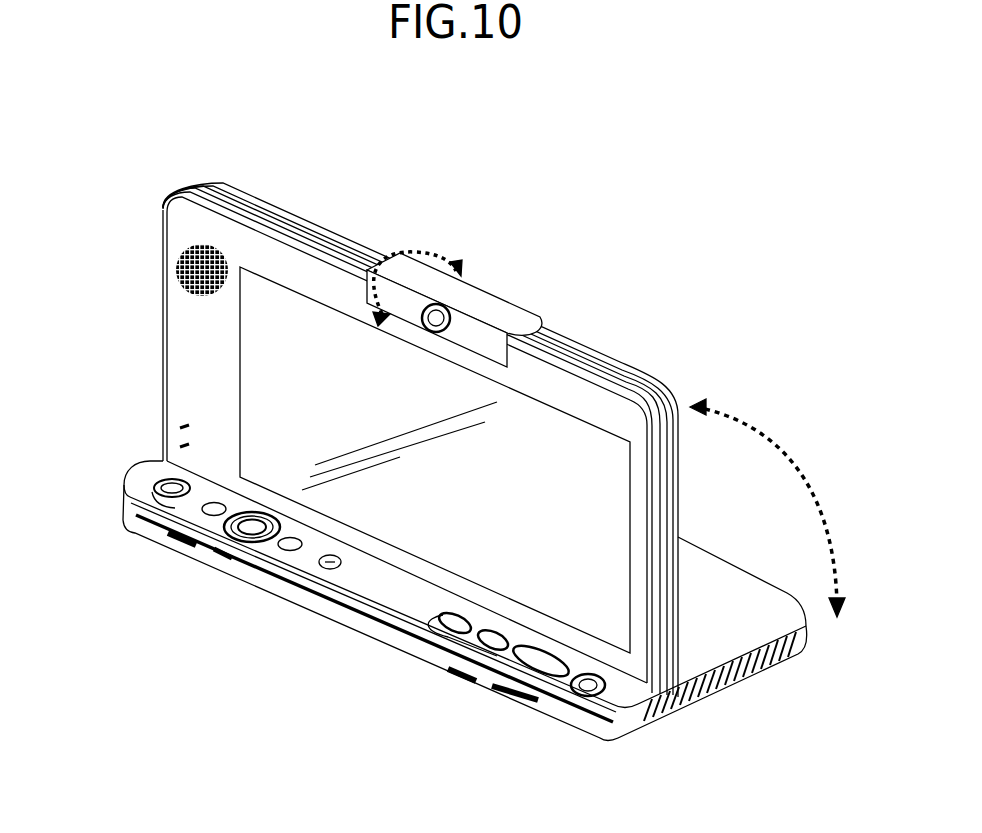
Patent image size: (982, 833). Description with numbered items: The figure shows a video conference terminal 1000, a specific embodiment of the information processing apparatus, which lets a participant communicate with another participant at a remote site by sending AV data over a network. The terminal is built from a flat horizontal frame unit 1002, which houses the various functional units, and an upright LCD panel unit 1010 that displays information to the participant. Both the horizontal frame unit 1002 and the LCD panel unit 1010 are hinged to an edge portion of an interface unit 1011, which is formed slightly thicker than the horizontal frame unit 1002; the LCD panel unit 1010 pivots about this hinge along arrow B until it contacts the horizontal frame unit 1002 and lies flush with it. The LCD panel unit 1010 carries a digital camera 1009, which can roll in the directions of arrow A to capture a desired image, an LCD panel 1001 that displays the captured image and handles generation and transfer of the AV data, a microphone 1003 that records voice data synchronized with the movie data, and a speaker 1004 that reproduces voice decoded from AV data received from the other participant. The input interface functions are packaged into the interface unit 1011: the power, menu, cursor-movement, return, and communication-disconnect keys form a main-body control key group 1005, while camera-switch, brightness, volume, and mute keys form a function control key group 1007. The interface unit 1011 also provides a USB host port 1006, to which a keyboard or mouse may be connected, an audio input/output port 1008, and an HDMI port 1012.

The video conference terminal 1000 is at (867, 171).
The LCD panel 1001 is at (320, 330).
The horizontal frame unit 1002 is at (731, 566).
The microphone 1003 is at (574, 393).
The speaker 1004 is at (178, 257).
The main-body control key group 1005 is at (212, 556).
The USB host port 1006 is at (230, 545).
The function control key group 1007 is at (487, 683).
The audio input/output port 1008 is at (542, 700).
The digital camera 1009 is at (438, 305).
The LCD panel unit 1010 is at (345, 238).
The interface unit 1011 is at (147, 473).
The HDMI port 1012 is at (748, 668).